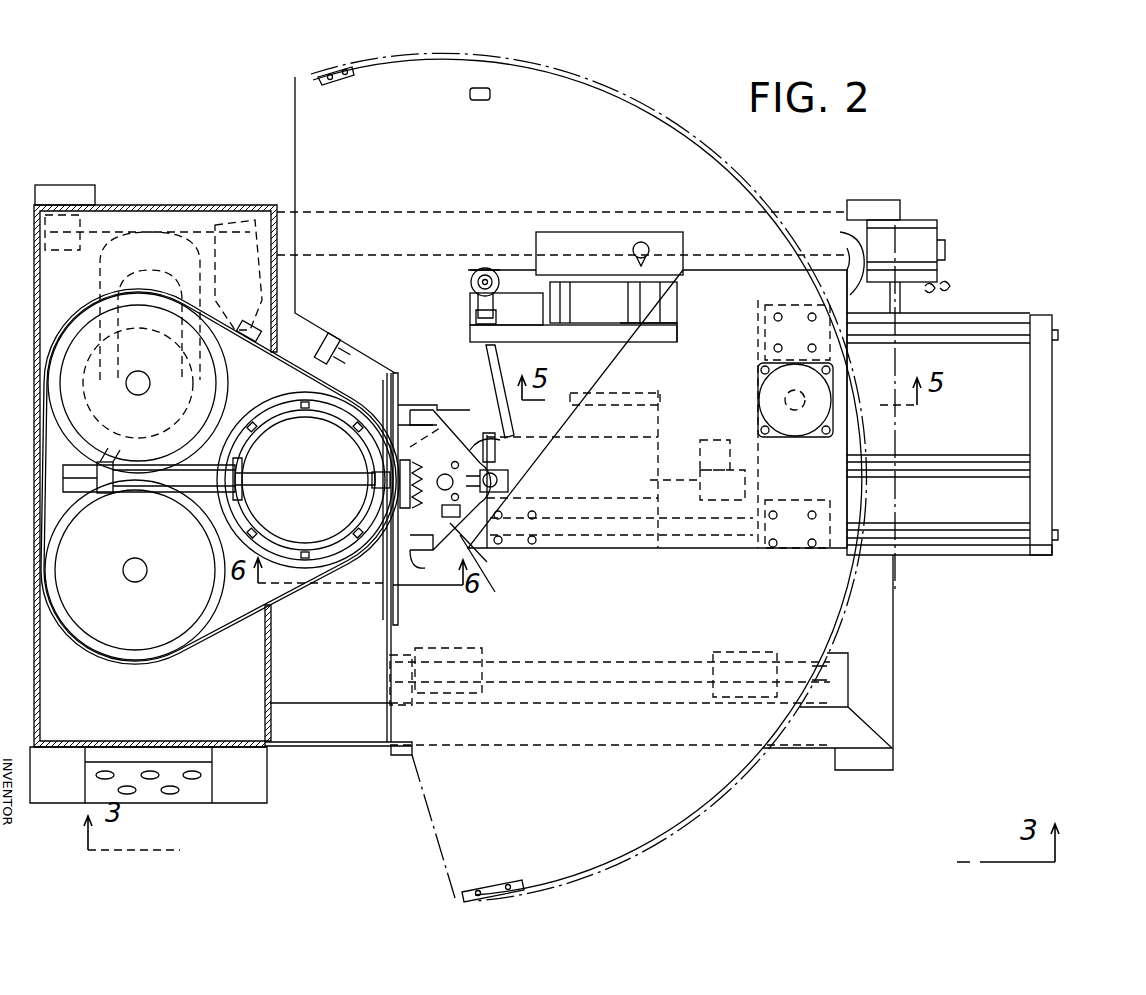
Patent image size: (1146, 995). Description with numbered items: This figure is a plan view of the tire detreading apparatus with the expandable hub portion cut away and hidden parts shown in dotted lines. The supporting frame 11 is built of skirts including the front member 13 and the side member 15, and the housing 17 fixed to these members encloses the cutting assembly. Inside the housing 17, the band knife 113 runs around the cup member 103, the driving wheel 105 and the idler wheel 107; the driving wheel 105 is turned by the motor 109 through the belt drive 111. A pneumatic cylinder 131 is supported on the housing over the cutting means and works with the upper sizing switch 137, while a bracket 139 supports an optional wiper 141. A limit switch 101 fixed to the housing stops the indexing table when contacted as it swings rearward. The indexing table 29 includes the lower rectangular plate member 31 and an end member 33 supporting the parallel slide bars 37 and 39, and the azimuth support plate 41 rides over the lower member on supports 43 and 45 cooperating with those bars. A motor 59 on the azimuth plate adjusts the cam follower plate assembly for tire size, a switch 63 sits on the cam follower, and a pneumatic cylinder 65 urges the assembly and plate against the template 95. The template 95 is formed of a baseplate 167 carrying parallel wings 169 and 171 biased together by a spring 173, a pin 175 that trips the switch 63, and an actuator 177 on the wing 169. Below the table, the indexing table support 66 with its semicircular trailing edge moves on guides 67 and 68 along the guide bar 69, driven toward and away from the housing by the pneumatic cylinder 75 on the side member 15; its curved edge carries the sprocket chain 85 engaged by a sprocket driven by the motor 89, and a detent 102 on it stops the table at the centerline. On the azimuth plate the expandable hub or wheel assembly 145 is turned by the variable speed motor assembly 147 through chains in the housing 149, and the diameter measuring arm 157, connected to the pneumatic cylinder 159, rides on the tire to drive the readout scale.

The supporting frame 11 is at (353, 756).
The front member 13 is at (800, 748).
The side member 15 is at (895, 665).
The housing 17 is at (138, 206).
The indexing table 29 is at (1071, 371).
The lower rectangular plate member 31 is at (949, 407).
The end member 33 is at (1052, 415).
The slide bar 37 is at (962, 545).
The slide bar 39 is at (975, 325).
The azimuth support plate 41 is at (722, 272).
The support 43 is at (548, 550).
The support 45 is at (757, 548).
The motor 59 is at (768, 388).
The switch 63 is at (512, 480).
The pneumatic cylinder 65 is at (978, 468).
The indexing table support 66 is at (670, 828).
The guide 67 is at (440, 700).
The guide 68 is at (745, 700).
The guide bar 69 is at (585, 660).
The pneumatic cylinder 75 is at (740, 492).
The sprocket chain 85 is at (498, 880).
The motor 89 is at (935, 222).
The template 95 is at (430, 397).
The limit switch 101 is at (326, 340).
The detent 102 is at (490, 95).
The cup member 103 is at (322, 570).
The driving wheel 105 is at (92, 320).
The idler wheel 107 is at (108, 645).
The motor 109 is at (195, 230).
The belt drive 111 is at (190, 380).
The band knife 113 is at (238, 620).
The pneumatic cylinder 131 is at (166, 492).
The upper sizing switch 137 is at (105, 493).
The bracket 139 is at (245, 225).
The wiper 141 is at (245, 325).
The expandable hub or wheel assembly 145 is at (636, 352).
The variable speed motor assembly 147 is at (640, 302).
The housing 149 is at (588, 343).
The diameter measuring arm 157 is at (512, 420).
The pneumatic cylinder 159 is at (478, 270).
The baseplate 167 is at (500, 448).
The wing 169 is at (428, 567).
The wing 171 is at (395, 373).
The spring 173 is at (445, 440).
The pin 175 is at (487, 562).
The actuator 177 is at (495, 592).